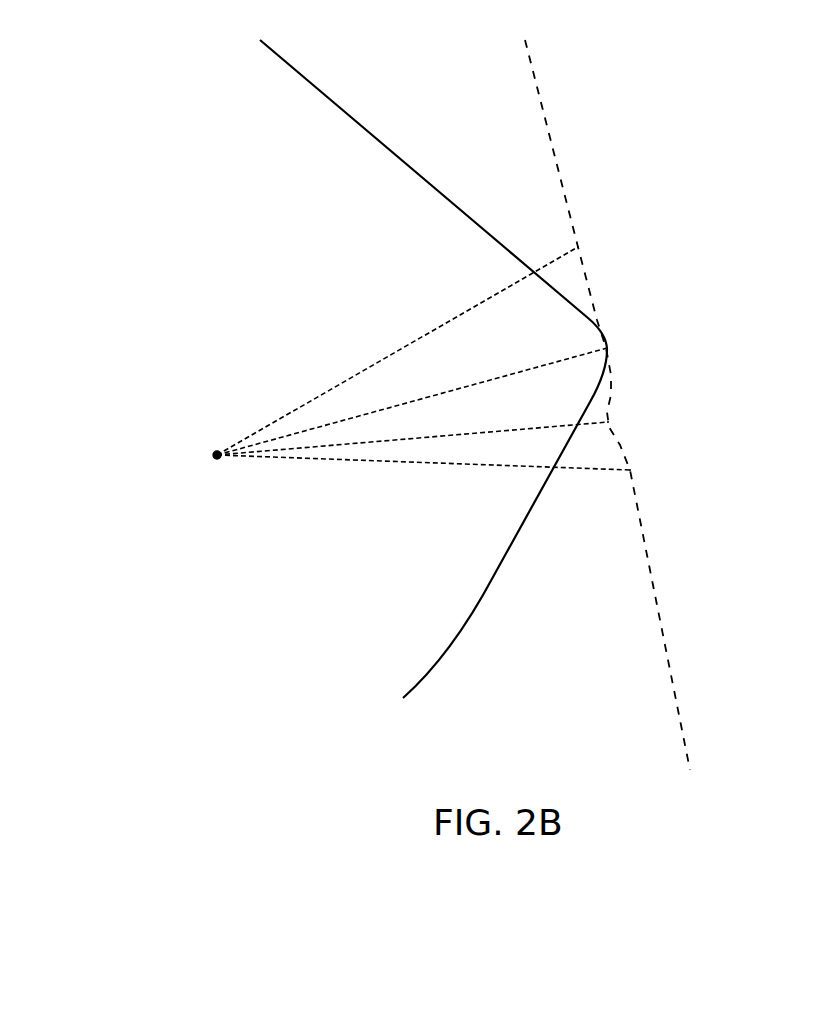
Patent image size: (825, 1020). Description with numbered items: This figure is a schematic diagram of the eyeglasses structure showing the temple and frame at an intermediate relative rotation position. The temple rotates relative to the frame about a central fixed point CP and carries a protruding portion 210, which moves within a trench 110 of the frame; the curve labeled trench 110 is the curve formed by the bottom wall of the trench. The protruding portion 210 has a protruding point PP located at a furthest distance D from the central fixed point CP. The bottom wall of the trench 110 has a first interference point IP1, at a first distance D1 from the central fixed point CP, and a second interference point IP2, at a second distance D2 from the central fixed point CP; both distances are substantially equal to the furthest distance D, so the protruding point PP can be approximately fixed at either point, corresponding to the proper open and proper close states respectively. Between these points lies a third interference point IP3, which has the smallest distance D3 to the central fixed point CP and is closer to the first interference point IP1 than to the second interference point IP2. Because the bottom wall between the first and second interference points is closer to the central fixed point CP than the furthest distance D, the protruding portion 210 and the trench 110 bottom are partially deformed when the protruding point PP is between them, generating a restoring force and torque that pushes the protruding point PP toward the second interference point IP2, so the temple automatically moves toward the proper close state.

The protruding portion 210 is at (355, 118).
The trench 110 is at (543, 113).
The central fixed point CP is at (215, 448).
The furthest distance D is at (365, 413).
The first distance D1 is at (388, 462).
The second distance D2 is at (405, 343).
The smallest distance D3 is at (510, 425).
The first interference point IP1 is at (634, 475).
The second interference point IP2 is at (583, 248).
The third interference point IP3 is at (611, 423).
The protruding point PP is at (610, 347).